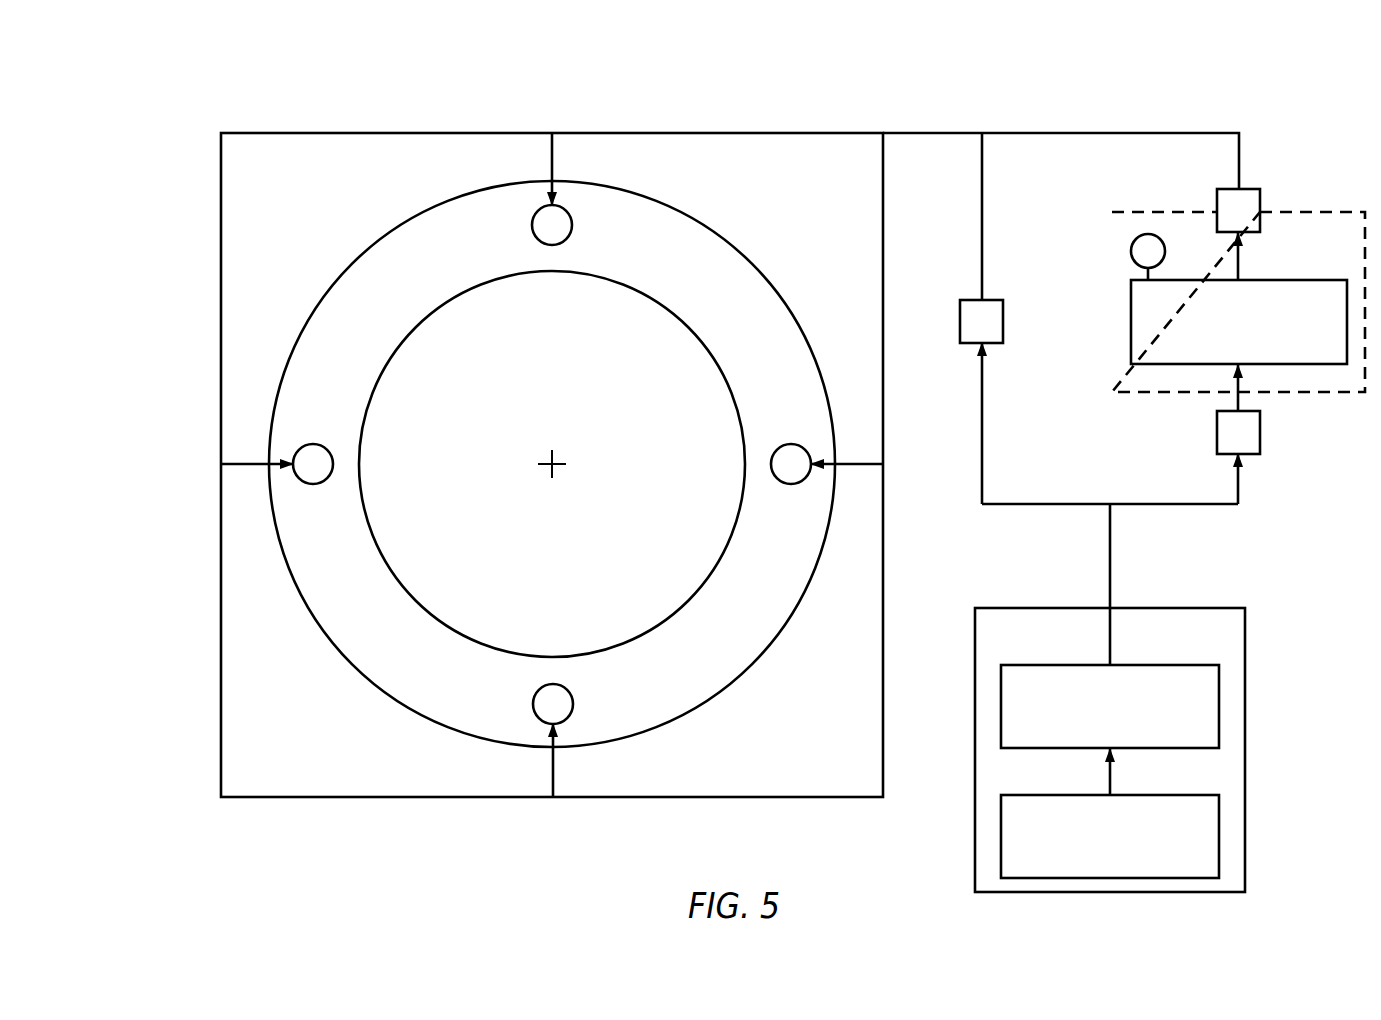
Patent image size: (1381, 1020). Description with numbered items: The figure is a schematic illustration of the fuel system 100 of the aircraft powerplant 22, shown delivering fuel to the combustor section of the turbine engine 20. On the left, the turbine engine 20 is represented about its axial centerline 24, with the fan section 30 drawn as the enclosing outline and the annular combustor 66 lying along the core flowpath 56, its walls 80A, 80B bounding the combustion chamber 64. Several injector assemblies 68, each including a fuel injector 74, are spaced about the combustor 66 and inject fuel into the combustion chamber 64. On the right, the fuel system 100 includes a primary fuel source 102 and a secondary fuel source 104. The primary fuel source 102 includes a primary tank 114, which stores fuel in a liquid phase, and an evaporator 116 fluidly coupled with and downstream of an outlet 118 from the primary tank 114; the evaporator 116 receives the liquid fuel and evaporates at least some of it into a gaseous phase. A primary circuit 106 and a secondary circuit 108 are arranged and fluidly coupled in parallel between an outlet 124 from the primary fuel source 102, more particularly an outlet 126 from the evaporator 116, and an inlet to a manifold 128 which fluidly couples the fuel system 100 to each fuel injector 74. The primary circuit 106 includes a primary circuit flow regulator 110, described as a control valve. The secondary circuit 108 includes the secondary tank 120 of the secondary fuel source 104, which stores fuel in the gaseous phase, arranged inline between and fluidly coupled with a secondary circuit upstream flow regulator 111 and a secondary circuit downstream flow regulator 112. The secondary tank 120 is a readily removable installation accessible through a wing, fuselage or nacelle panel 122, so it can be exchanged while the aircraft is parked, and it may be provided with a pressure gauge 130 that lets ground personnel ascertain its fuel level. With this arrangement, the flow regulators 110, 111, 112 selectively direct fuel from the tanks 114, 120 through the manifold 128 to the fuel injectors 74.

The turbine engine 20 is at (250, 104).
The aircraft powerplant 22 is at (124, 126).
The axial centerline 24 is at (553, 470).
The fan section 30 is at (694, 176).
The core flowpath 56 is at (582, 464).
The combustion chamber 64 is at (803, 383).
The combustor 66 is at (737, 241).
The injector assembly 68 is at (552, 464).
The fuel injector 74 is at (553, 245).
The combustor wall 80A is at (722, 370).
The combustor wall 80B is at (787, 300).
The fuel system 100 is at (1257, 109).
The primary fuel source 102 is at (1245, 757).
The secondary fuel source 104 is at (1239, 298).
The primary circuit 106 is at (966, 270).
The secondary circuit 108 is at (1258, 177).
The primary circuit flow regulator 110 is at (960, 323).
The secondary circuit upstream flow regulator 111 is at (1260, 435).
The secondary circuit downstream flow regulator 112 is at (1262, 200).
The primary tank 114 is at (1090, 868).
The evaporator 116 is at (1090, 738).
The primary tank outlet 118 is at (1110, 795).
The secondary tank 120 is at (1195, 350).
The panel 122 is at (1150, 392).
The primary fuel source outlet 124 is at (1110, 608).
The evaporator outlet 126 is at (1110, 665).
The manifold 128 is at (787, 133).
The pressure gauge 130 is at (1148, 234).